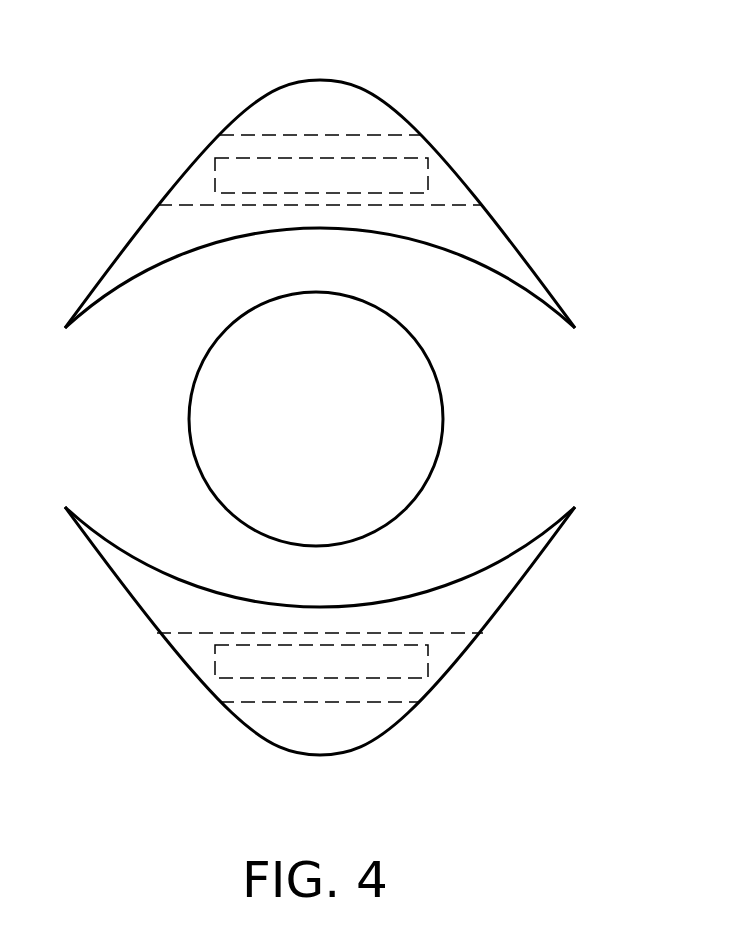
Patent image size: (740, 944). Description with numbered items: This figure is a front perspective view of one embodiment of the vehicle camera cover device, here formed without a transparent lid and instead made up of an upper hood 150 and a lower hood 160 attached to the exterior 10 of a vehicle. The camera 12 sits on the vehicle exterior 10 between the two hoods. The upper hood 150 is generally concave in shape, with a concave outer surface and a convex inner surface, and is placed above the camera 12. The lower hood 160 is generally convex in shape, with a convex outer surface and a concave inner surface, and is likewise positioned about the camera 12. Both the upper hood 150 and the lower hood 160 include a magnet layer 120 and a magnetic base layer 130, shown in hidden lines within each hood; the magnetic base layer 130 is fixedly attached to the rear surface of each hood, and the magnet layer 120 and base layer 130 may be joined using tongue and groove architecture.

The vehicle exterior 10 is at (656, 427).
The camera 12 is at (418, 425).
The magnet layer 120 is at (290, 178).
The magnetic base layer 130 is at (194, 176).
The upper hood 150 is at (500, 117).
The lower hood 160 is at (527, 686).